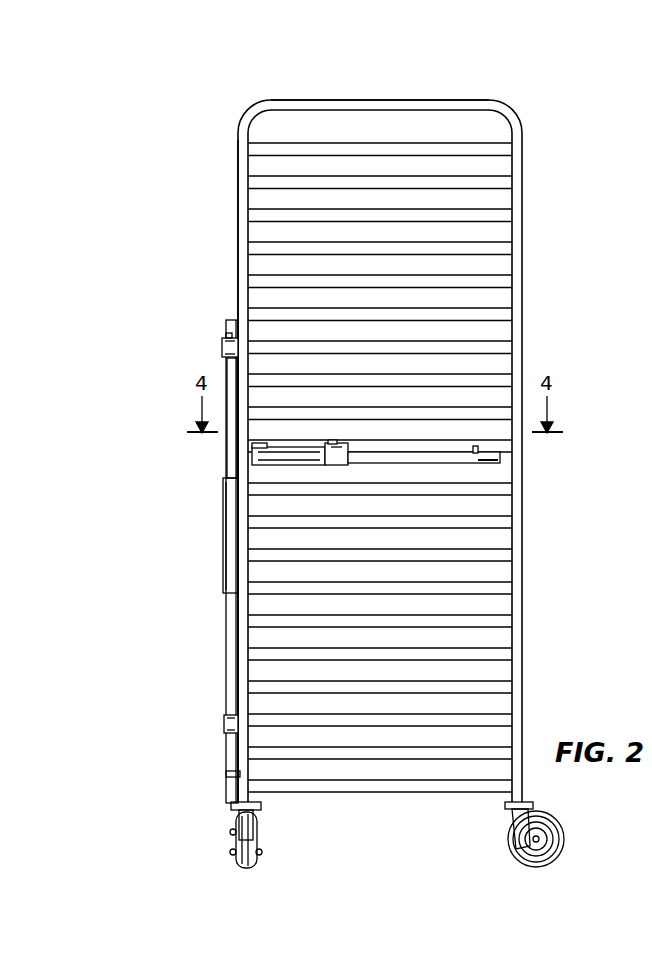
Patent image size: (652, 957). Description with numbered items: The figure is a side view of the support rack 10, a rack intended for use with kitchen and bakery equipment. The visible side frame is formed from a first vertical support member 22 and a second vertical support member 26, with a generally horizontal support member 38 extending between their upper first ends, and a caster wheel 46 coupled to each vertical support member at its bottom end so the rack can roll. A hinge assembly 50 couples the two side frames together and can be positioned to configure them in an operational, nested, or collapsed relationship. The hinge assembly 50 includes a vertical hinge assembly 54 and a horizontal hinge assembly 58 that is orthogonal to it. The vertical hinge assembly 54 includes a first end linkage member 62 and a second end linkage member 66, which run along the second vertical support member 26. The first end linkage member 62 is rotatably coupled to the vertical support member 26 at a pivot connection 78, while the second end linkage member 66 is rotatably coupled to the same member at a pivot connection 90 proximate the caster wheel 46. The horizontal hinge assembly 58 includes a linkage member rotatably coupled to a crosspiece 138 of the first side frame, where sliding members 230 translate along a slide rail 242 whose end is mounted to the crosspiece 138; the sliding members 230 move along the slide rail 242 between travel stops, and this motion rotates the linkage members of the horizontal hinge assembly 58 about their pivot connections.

The support rack 10 is at (120, 186).
The first vertical support member 22 is at (522, 220).
The second vertical support member 26 is at (240, 258).
The horizontal support member 38 is at (377, 105).
The caster wheel 46 is at (262, 830).
The hinge assembly 50 is at (152, 472).
The vertical hinge assembly 54 is at (206, 557).
The horizontal hinge assembly 58 is at (422, 434).
The first end linkage member 62 is at (225, 378).
The second end linkage member 66 is at (226, 659).
The pivot connection 78 is at (222, 352).
The pivot connection 90 is at (225, 727).
The crosspiece 138 is at (505, 467).
The sliding member 230 is at (340, 466).
The slide rail 242 is at (430, 455).